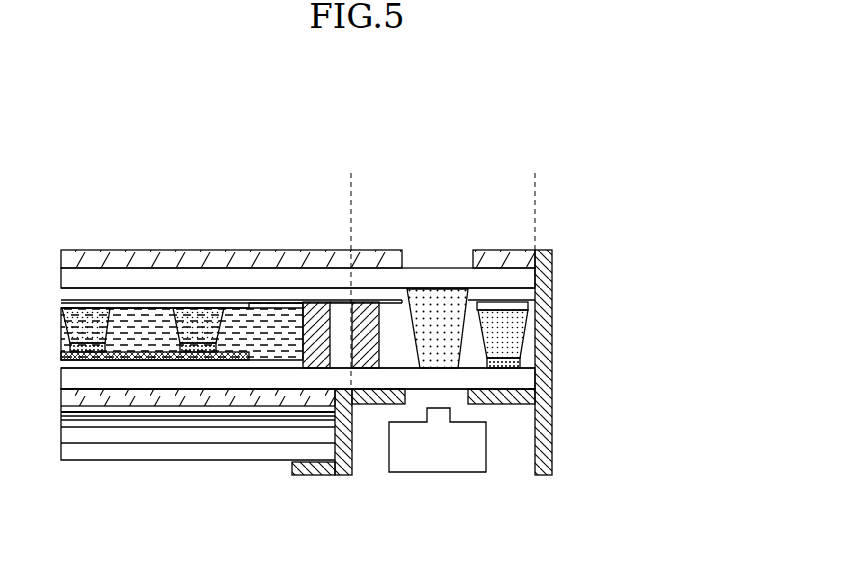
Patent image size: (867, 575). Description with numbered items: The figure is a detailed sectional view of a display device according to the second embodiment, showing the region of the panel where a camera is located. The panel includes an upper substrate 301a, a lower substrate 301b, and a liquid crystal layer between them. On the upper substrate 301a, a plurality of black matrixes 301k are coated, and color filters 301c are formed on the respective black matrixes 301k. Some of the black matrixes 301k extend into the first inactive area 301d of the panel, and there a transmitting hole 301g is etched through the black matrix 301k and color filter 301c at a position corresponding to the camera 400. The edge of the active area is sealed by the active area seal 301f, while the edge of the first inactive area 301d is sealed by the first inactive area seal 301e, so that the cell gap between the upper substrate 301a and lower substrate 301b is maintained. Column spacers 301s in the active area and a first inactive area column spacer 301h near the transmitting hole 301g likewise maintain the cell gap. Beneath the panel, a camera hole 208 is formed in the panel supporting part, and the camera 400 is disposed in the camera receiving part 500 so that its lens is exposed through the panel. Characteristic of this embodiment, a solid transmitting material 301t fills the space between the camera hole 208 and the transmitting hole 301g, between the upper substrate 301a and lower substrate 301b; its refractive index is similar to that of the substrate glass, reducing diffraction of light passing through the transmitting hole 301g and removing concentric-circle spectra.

The column spacer 301s is at (82, 307).
The upper substrate 301a is at (130, 278).
The black matrix 301k is at (187, 295).
The color filter 301c is at (232, 306).
The active area seal 301f is at (317, 304).
The first inactive area seal 301e is at (366, 318).
The transmitting material 301t is at (441, 296).
The first inactive area 301d is at (535, 185).
The transmitting hole 301g is at (470, 300).
The first inactive area column spacer 301h is at (526, 336).
The lower substrate 301b is at (128, 378).
The camera hole 208 is at (440, 398).
The camera 400 is at (477, 442).
The camera receiving part 500 is at (368, 476).